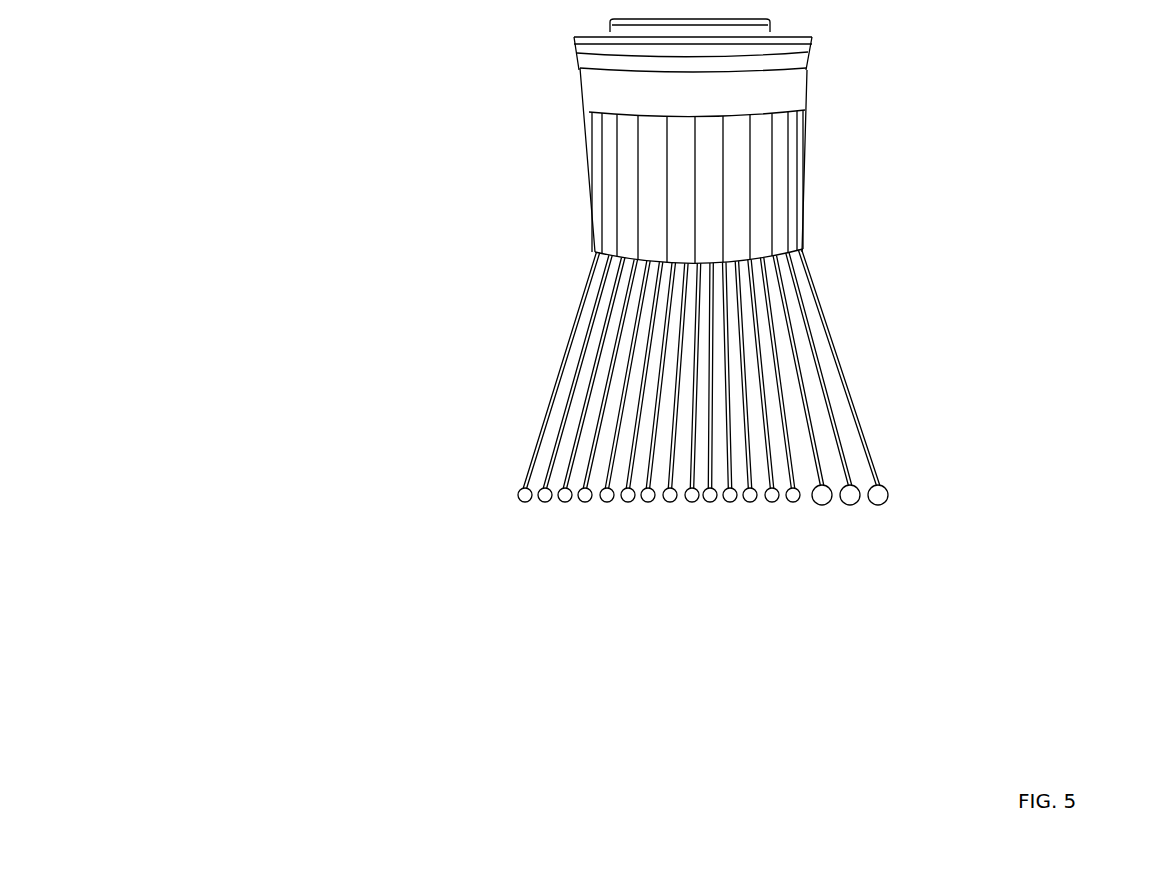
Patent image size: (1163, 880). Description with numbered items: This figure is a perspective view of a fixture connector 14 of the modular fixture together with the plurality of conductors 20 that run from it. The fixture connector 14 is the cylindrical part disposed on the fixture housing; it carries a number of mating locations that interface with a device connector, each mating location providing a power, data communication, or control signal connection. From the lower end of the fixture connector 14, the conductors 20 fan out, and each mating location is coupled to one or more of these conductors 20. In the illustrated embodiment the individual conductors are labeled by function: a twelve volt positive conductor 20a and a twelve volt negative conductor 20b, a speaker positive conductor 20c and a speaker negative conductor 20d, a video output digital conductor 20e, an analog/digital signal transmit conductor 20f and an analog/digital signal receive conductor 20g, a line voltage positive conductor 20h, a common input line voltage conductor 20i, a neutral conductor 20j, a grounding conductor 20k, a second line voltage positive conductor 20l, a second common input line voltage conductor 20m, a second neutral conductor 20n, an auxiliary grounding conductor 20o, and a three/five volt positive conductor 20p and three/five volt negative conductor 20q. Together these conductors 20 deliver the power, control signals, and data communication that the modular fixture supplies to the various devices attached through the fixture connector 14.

The fixture connector 14 is at (807, 141).
The conductors 20 is at (822, 322).
The 12 volt positive conductor 20a is at (518, 496).
The 12 volt negative conductor 20b is at (543, 501).
The speaker positive conductor 20c is at (564, 501).
The speaker negative conductor 20d is at (585, 501).
The video output digital conductor 20e is at (606, 501).
The analog/digital signal transmit conductor 20f is at (627, 501).
The analog/digital signal receive conductor 20g is at (648, 501).
The line voltage positive conductor 20h is at (889, 494).
The common input line voltage conductor 20i is at (857, 501).
The neutral conductor 20j is at (825, 501).
The grounding conductor 20k is at (798, 500).
The line voltage positive conductor 20l is at (777, 500).
The common input line voltage conductor 20m is at (757, 500).
The neutral conductor 20n is at (735, 500).
The auxiliary grounding conductor 20o is at (714, 500).
The 3/5 volt positive conductor 20p is at (669, 501).
The 3/5 volt negative conductor 20q is at (689, 501).